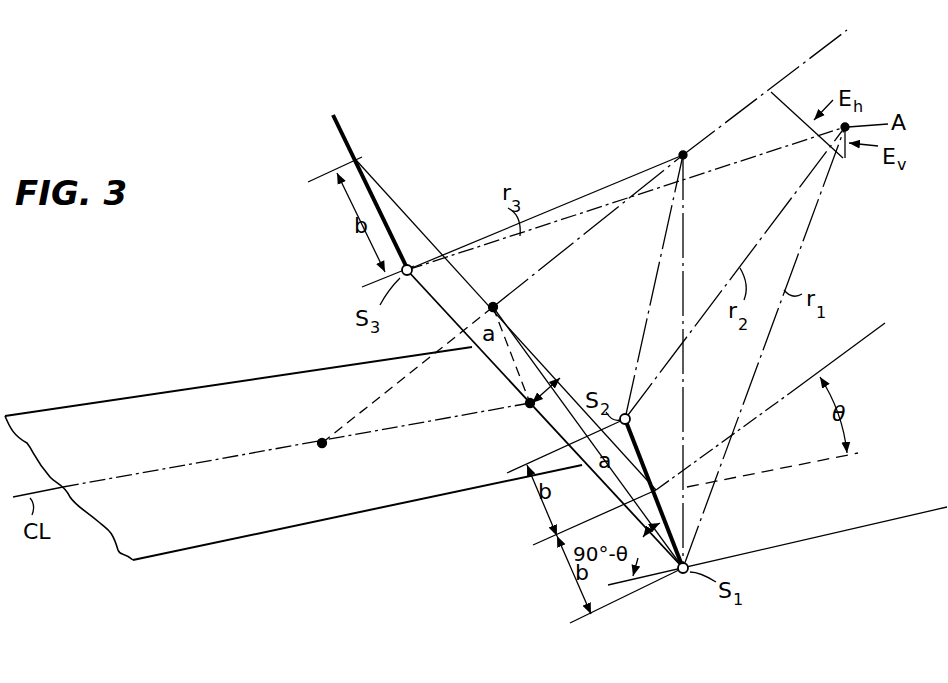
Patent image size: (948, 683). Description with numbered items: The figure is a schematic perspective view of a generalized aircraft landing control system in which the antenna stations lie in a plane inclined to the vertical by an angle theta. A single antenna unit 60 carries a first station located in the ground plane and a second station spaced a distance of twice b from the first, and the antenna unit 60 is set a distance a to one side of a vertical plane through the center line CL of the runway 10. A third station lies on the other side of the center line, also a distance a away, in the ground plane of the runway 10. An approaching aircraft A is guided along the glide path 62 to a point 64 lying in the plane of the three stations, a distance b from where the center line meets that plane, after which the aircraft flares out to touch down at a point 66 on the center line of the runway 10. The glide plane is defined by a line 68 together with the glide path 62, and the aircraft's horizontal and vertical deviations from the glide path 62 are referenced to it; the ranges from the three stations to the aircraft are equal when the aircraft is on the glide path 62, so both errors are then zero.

The runway 10 is at (102, 392).
The antenna unit 60 is at (643, 455).
The glide path 62 is at (584, 237).
The point 64 is at (493, 304).
The touch down point 66 is at (320, 450).
The line 68 is at (408, 212).